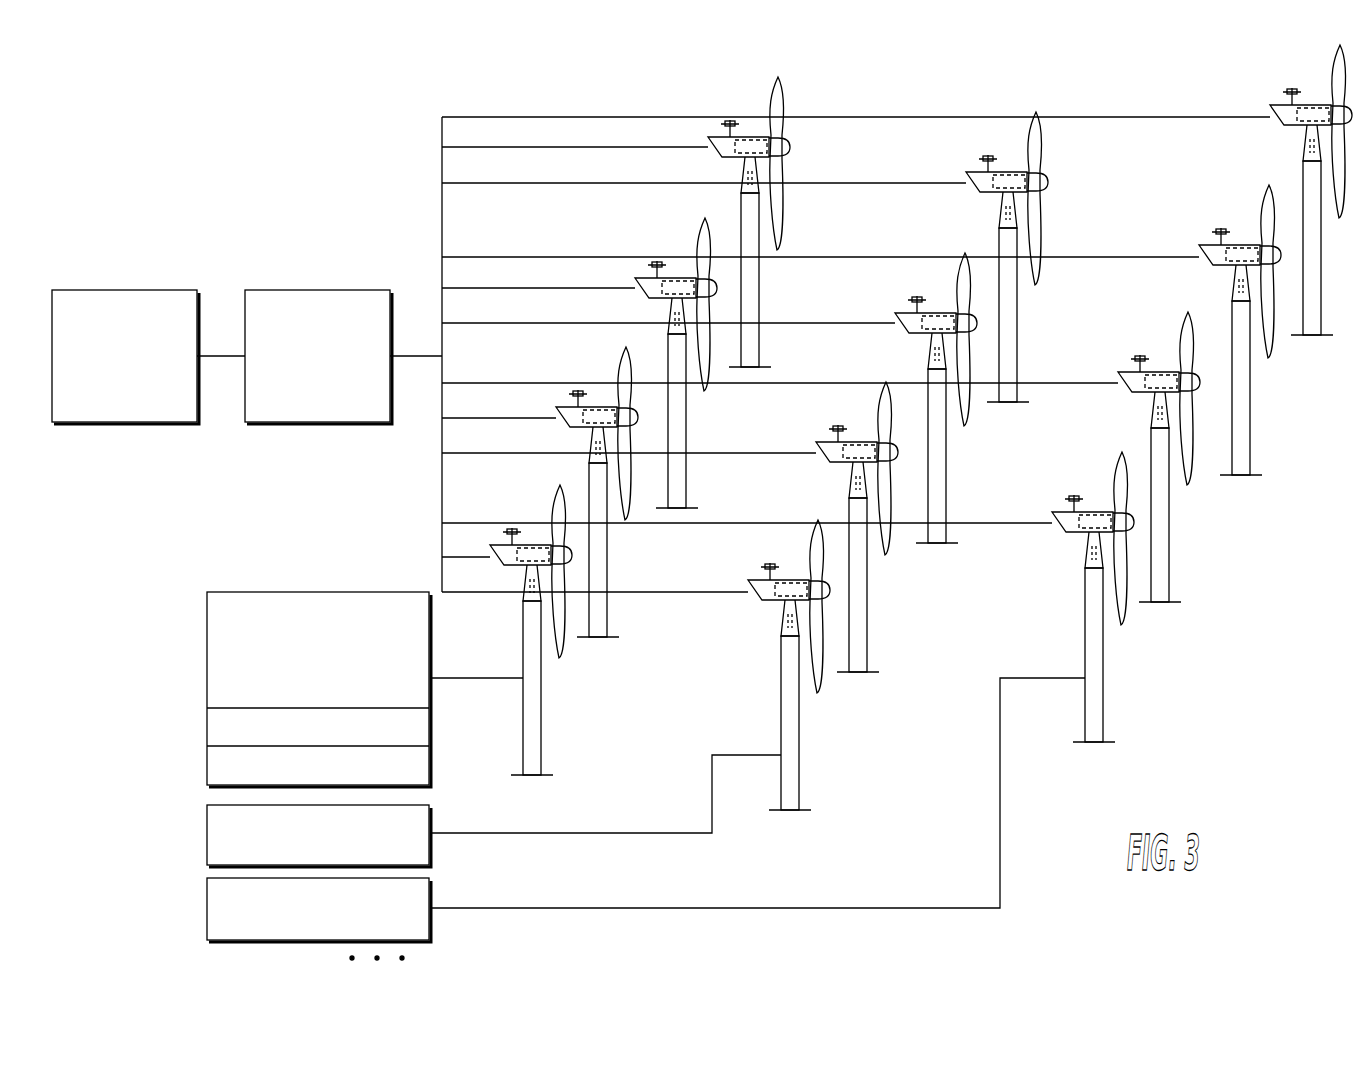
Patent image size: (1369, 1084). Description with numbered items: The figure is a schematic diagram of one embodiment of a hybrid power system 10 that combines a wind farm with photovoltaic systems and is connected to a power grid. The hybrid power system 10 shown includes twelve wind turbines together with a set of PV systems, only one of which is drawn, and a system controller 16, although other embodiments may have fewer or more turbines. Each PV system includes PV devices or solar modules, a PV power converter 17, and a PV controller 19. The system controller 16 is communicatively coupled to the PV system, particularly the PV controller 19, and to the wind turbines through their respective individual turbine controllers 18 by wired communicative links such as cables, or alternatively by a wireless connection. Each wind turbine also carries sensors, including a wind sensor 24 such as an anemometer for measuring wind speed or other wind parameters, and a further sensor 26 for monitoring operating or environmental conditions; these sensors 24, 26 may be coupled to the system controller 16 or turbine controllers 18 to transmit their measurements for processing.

The hybrid power system 10 is at (348, 167).
The system controller 16 is at (334, 363).
The PV power converter 17 is at (207, 735).
The turbine controller 18 is at (528, 553).
The PV controller 19 is at (207, 768).
The wind sensor 24 is at (753, 598).
The sensor 26 is at (757, 705).